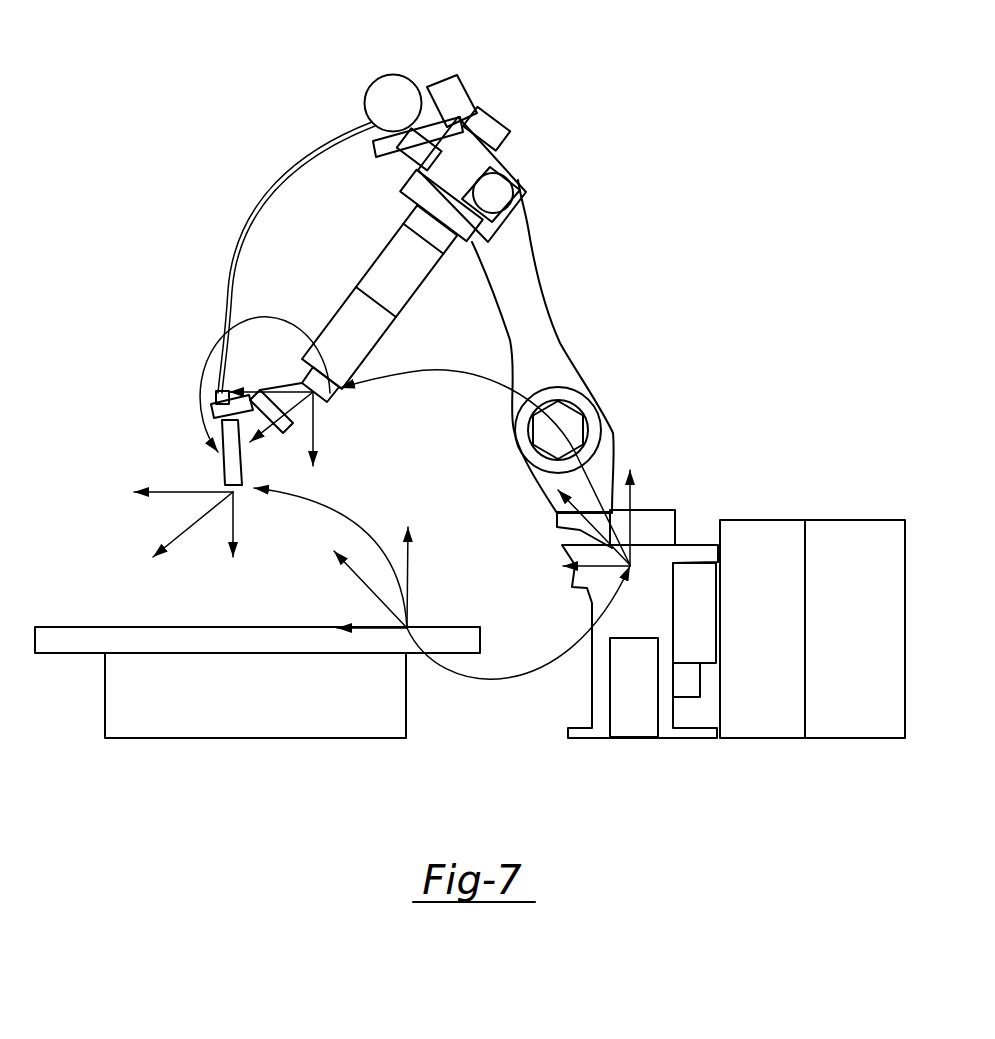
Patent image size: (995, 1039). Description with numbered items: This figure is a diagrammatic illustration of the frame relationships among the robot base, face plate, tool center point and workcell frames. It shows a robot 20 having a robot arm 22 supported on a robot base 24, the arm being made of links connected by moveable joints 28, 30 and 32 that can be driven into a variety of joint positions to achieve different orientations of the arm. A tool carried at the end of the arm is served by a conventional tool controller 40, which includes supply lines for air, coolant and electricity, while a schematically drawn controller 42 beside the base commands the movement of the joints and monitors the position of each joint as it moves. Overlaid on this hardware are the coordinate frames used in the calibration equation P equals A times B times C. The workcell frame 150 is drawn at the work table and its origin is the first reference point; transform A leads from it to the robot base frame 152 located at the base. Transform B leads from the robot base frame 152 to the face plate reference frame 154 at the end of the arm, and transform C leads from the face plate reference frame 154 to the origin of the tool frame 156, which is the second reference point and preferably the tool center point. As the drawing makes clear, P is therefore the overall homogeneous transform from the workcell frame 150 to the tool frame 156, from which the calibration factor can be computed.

The robot 20 is at (618, 299).
The robot arm 22 is at (541, 276).
The robot base 24 is at (592, 697).
The joint 28 is at (500, 187).
The joint 30 is at (578, 419).
The joint 32 is at (657, 510).
The tool controller 40 is at (368, 75).
The controller 42 is at (828, 637).
The workcell frame 150 is at (400, 653).
The robot base frame 152 is at (630, 565).
The face plate reference frame 154 is at (313, 378).
The tool frame 156 is at (247, 492).